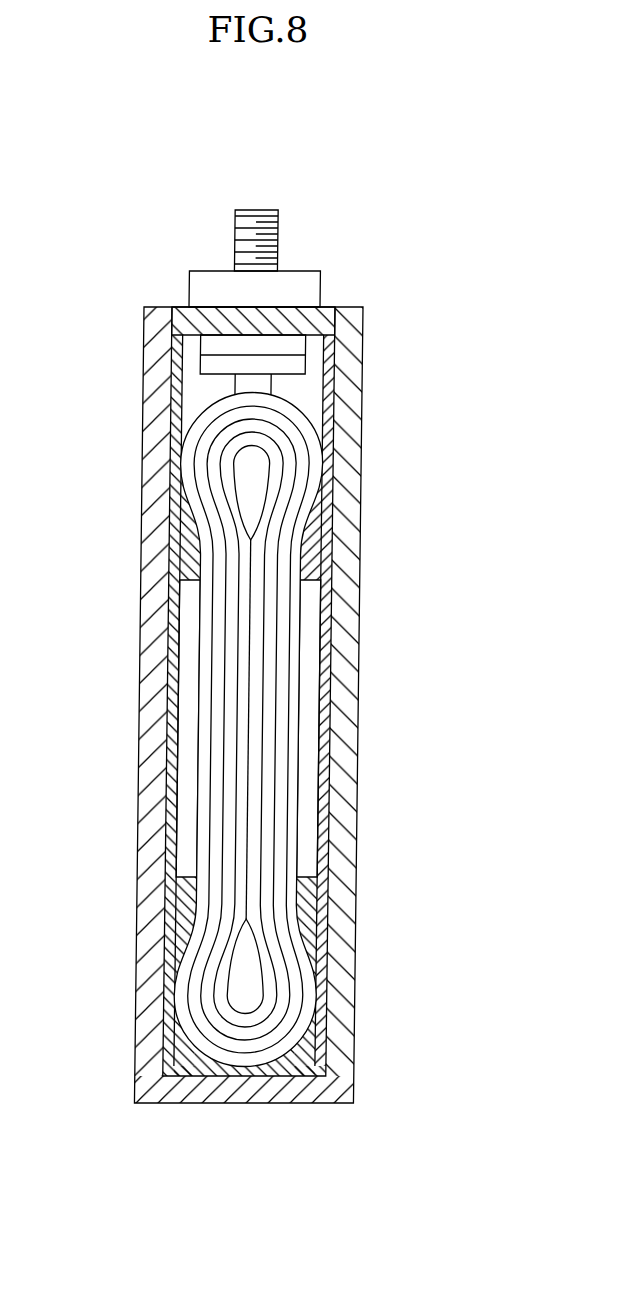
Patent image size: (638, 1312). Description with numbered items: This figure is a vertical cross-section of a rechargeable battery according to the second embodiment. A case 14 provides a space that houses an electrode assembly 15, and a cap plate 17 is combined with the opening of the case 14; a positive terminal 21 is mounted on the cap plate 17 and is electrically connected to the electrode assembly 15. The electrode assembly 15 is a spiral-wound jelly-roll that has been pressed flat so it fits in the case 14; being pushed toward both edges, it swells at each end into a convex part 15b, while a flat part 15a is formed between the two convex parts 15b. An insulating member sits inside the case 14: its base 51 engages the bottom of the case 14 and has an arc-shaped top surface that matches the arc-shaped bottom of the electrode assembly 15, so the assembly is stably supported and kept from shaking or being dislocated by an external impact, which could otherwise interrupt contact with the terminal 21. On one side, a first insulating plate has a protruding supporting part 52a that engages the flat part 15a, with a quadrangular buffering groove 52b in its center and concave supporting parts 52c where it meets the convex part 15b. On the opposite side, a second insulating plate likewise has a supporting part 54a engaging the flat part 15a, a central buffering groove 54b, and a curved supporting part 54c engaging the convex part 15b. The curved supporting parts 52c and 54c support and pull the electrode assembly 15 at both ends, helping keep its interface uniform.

The case 14 is at (362, 430).
The electrode assembly 15 is at (318, 729).
The flat part 15a is at (304, 620).
The convex part 15b is at (317, 475).
The cap plate 17 is at (323, 309).
The positive terminal 21 is at (257, 209).
The base 51 is at (299, 1050).
The supporting part 52a is at (200, 570).
The buffering groove 52b is at (186, 745).
The concave supporting part 52c is at (192, 960).
The supporting part 54a is at (303, 572).
The buffering groove 54b is at (324, 771).
The curved supporting part 54c is at (315, 962).